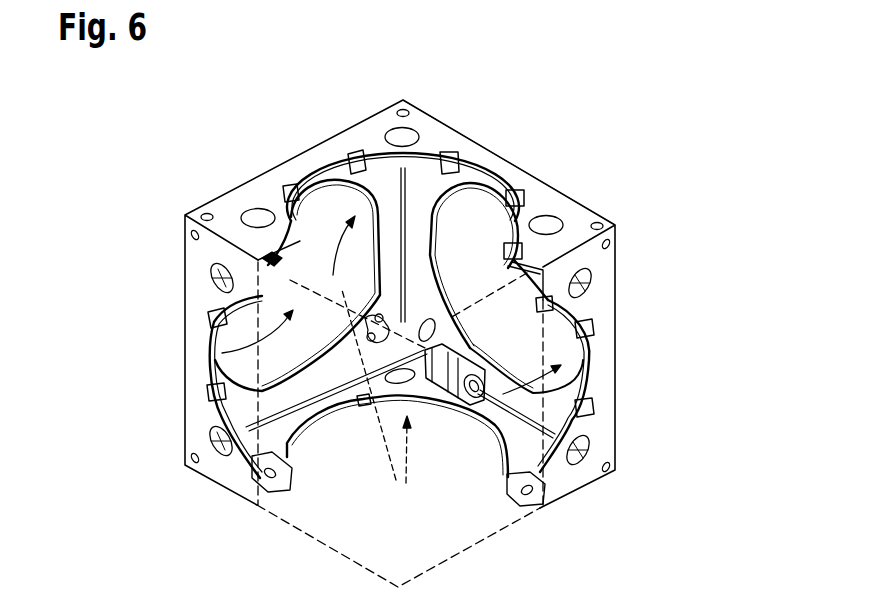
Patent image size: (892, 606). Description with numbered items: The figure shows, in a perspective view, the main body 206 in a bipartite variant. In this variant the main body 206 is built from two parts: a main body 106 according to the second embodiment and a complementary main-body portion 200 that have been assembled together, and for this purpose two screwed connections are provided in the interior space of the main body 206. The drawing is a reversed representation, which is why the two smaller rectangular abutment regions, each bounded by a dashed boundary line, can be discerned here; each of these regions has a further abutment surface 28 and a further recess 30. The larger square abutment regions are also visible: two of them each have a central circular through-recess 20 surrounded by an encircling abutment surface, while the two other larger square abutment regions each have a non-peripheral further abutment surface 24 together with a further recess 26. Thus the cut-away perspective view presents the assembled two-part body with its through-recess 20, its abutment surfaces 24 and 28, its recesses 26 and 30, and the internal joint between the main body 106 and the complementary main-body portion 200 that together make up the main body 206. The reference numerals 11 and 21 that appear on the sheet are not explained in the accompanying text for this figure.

The complementary main-body portion 200 is at (547, 152).
The side plate 11 is at (367, 123).
The further abutment surface 24 is at (430, 130).
The main body 106 is at (288, 152).
The main body 206 is at (158, 307).
The ring 21 is at (255, 365).
The central circular through-recess 20 is at (265, 332).
The further abutment surface 28 is at (197, 415).
The further recess 30 is at (259, 405).
The further recess 26 is at (380, 404).